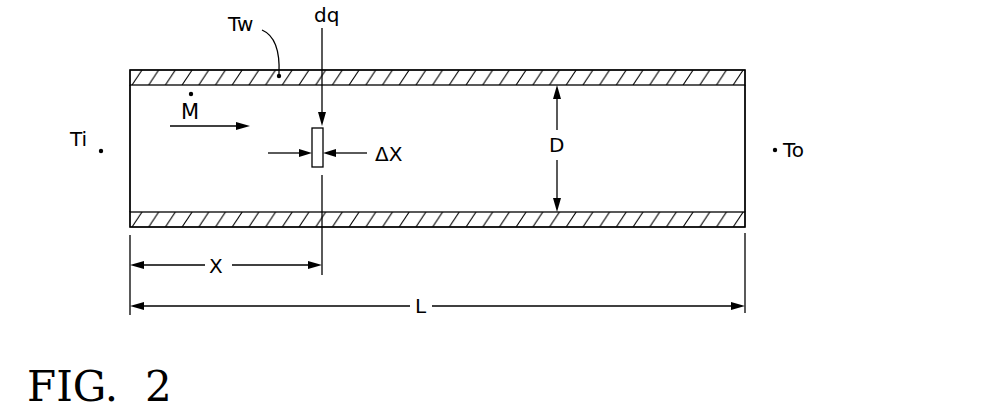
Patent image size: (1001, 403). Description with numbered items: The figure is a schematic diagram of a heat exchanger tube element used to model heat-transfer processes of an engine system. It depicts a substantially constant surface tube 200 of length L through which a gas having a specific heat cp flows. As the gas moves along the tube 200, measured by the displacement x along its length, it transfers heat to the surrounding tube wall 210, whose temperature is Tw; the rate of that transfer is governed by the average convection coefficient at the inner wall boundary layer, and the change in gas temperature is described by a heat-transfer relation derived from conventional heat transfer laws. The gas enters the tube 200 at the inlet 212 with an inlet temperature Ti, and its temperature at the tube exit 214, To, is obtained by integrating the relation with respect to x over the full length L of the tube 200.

The tube 200 is at (452, 116).
The tube wall 210 is at (518, 72).
The inlet 212 is at (130, 176).
The tube exit 214 is at (737, 183).